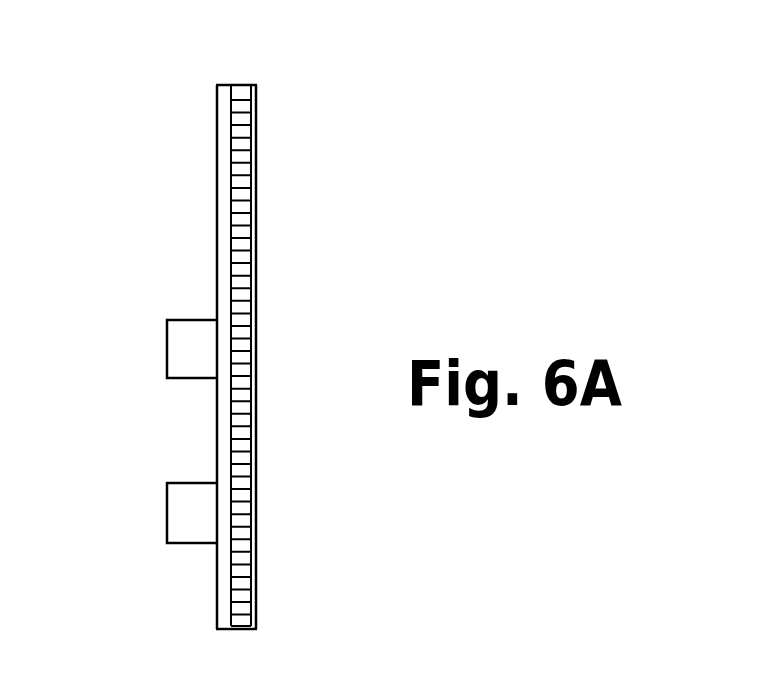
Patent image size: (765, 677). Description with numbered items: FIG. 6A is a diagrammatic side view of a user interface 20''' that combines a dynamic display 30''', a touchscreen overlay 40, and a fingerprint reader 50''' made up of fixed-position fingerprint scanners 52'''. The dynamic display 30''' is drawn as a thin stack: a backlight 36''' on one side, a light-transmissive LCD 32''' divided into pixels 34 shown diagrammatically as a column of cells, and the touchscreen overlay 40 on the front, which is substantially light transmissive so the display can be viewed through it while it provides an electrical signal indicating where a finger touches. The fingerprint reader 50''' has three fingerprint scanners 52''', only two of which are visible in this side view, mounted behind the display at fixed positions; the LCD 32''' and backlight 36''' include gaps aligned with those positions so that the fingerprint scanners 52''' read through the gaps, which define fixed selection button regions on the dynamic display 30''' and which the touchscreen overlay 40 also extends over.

The user interface 20''' is at (274, 344).
The dynamic display 30''' is at (271, 344).
The LCD 32''' is at (275, 321).
The pixels 34 is at (241, 310).
The backlight 36''' is at (222, 320).
The touchscreen overlay 40 is at (258, 117).
The fingerprint reader 50''' is at (134, 391).
The fingerprint scanners 52''' is at (134, 431).